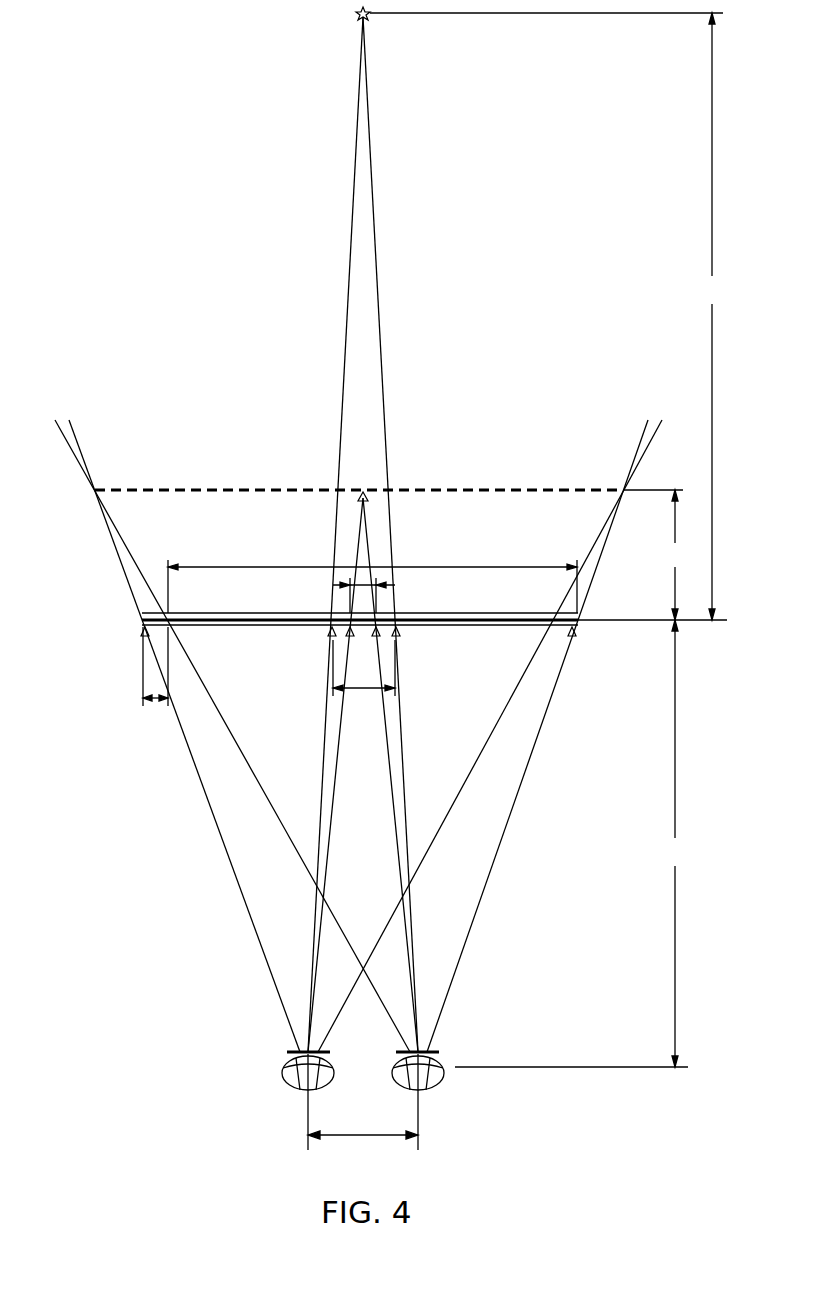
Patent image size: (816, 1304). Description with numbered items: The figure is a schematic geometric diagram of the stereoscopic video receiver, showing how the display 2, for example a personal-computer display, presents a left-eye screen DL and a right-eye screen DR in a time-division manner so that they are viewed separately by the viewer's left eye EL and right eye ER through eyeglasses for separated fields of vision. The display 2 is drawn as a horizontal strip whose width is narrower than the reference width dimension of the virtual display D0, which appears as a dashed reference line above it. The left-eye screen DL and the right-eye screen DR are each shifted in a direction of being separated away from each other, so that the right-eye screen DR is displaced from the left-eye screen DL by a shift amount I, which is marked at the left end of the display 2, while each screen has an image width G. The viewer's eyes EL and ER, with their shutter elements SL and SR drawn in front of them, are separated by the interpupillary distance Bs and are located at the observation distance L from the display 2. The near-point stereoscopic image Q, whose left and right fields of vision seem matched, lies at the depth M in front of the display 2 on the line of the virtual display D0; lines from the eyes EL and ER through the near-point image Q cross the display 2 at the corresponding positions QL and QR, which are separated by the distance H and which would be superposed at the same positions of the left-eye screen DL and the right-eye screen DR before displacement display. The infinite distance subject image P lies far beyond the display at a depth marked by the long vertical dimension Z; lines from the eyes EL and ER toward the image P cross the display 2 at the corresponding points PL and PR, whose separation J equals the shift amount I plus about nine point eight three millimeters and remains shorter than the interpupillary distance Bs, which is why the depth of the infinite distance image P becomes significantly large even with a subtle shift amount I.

The infinite distance subject image P is at (352, 13).
The near-point stereoscopic image Q is at (352, 488).
The virtual display D0 is at (498, 488).
The display 2 is at (140, 612).
The left-eye screen DL is at (143, 635).
The right-eye screen DR is at (578, 639).
The corresponding point of the infinite distance subject image on the left-eye scree PL is at (326, 636).
The corresponding point of the infinite distance subject image on the right-eye scre PR is at (402, 636).
The corresponding position of the near-point image on the left-eye screen QL is at (345, 648).
The corresponding position of the near-point image on the right-eye screen QR is at (384, 648).
The image width G is at (372, 586).
The distance between corresponding positions QL-QR H is at (333, 584).
The shift amount I is at (155, 677).
The distance between corresponding points PL and PR J is at (364, 678).
The distance from P to screen Z is at (548, 316).
The depth of the near-point image M is at (653, 555).
The observation distance L is at (571, 843).
The left shutter SL is at (286, 1051).
The right shutter SR is at (440, 1052).
The left eye EL is at (290, 1075).
The right eye ER is at (446, 1082).
The interpupillary distance Bs is at (363, 1120).